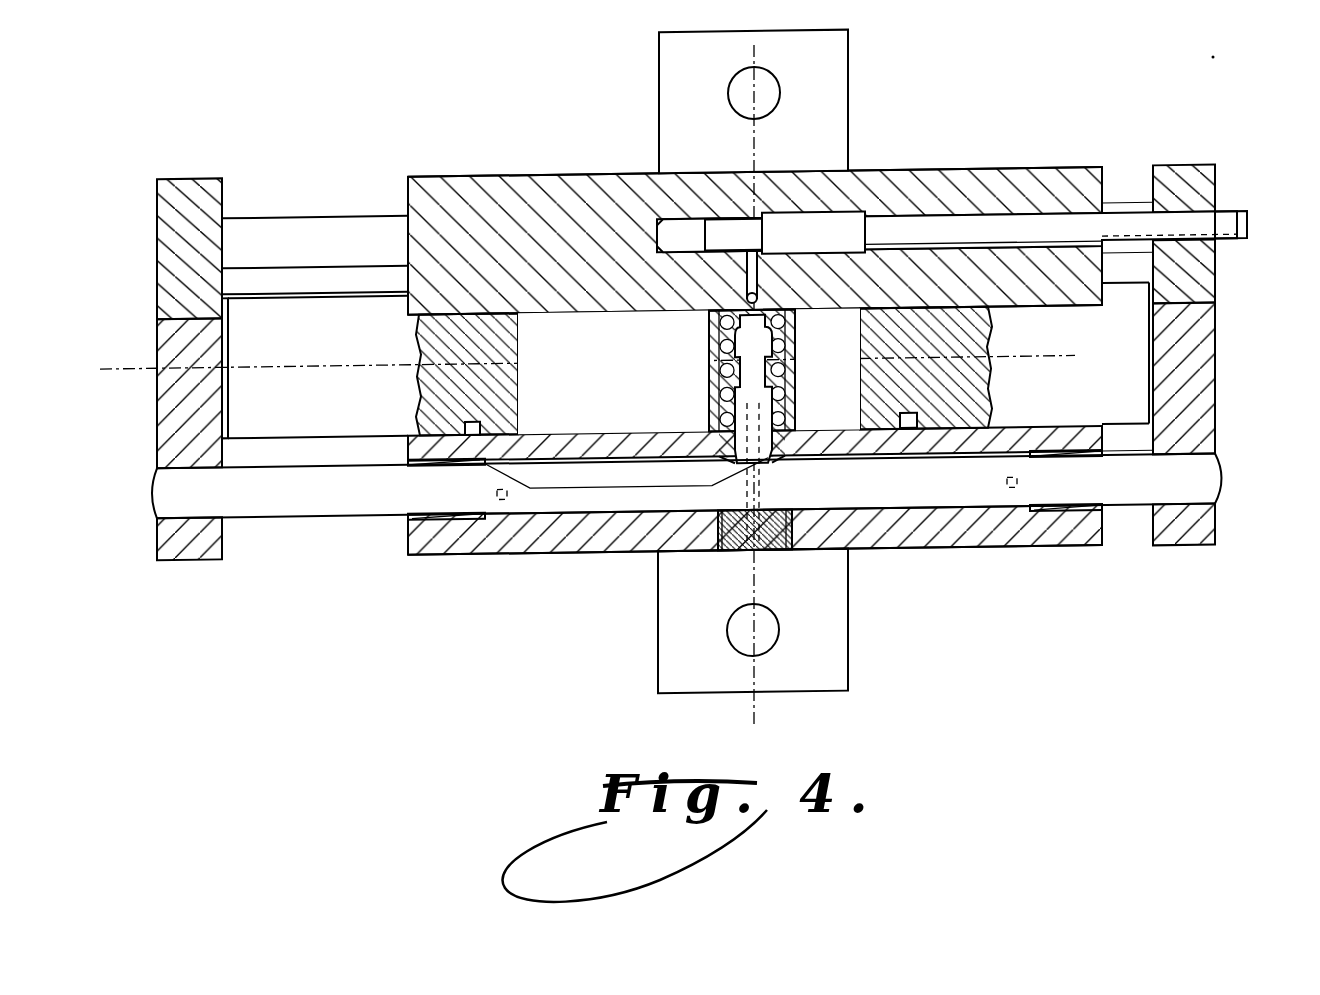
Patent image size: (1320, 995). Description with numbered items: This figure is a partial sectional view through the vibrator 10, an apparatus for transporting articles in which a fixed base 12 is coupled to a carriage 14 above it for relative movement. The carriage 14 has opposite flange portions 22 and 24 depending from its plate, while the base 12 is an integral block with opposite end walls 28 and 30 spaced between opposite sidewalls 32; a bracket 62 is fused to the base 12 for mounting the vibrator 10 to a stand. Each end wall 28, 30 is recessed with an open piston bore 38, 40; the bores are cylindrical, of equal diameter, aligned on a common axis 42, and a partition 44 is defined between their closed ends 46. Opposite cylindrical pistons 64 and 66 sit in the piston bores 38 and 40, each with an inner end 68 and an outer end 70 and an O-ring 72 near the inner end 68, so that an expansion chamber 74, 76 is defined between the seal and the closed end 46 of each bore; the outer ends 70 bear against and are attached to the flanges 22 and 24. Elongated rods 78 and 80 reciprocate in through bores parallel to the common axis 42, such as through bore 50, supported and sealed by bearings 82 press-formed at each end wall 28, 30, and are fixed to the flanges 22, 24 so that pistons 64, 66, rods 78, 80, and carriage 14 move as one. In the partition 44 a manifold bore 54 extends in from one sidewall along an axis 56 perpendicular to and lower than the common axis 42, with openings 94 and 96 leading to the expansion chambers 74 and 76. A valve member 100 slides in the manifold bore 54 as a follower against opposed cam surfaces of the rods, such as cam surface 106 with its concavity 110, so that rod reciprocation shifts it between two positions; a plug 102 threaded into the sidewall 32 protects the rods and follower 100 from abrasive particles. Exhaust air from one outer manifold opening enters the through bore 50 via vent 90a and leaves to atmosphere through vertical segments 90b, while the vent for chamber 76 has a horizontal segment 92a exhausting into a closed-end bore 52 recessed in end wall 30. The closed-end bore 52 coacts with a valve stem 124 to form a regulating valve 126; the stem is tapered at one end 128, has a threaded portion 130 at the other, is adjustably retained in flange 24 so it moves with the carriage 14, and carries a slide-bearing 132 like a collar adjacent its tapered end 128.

The vibrator 10 is at (955, 101).
The base 12 is at (436, 556).
The carriage 14 is at (190, 172).
The flange portion 22 is at (155, 393).
The flange portion 24 is at (1215, 364).
The end wall 28 is at (410, 545).
The end wall 30 is at (1102, 172).
The sidewall 32 is at (470, 172).
The piston bore 38 is at (598, 318).
The piston bore 40 is at (845, 320).
The common axis 42 is at (140, 354).
The partition 44 is at (709, 411).
The closed end 46 is at (795, 340).
The through bore 50 is at (537, 483).
The closed-end bore 52 is at (665, 218).
The manifold bore 54 is at (722, 462).
The axis 56 is at (757, 727).
The bracket 62 is at (846, 58).
The piston 64 is at (258, 300).
The piston 66 is at (1143, 424).
The inner end 68 is at (516, 386).
The outer end 70 is at (225, 388).
The O-ring 72 is at (912, 420).
The expansion chamber 74 is at (572, 358).
The expansion chamber 76 is at (842, 422).
The elongated rod 78 is at (297, 212).
The elongated rod 80 is at (290, 512).
The bearing 82 is at (405, 460).
The vent 90a is at (762, 492).
The vertical segment 90b is at (497, 490).
The horizontal segment 92a is at (745, 278).
The opening 94 is at (712, 334).
The opening 96 is at (790, 387).
The valve member 100 is at (765, 460).
The plug 102 is at (770, 552).
The cam surface 106 is at (878, 458).
The concavity 110 is at (606, 485).
The valve stem 124 is at (1000, 220).
The regulating valve 126 is at (1250, 231).
The tapered end 128 is at (722, 224).
The threaded portion 130 is at (1225, 218).
The slide-bearing 132 is at (820, 214).